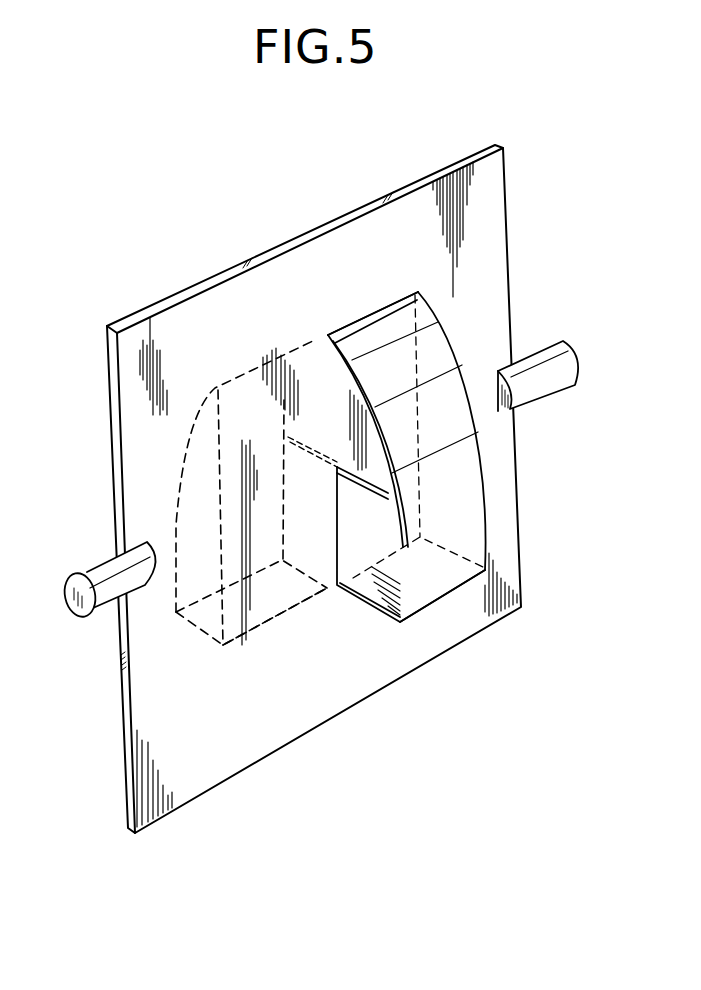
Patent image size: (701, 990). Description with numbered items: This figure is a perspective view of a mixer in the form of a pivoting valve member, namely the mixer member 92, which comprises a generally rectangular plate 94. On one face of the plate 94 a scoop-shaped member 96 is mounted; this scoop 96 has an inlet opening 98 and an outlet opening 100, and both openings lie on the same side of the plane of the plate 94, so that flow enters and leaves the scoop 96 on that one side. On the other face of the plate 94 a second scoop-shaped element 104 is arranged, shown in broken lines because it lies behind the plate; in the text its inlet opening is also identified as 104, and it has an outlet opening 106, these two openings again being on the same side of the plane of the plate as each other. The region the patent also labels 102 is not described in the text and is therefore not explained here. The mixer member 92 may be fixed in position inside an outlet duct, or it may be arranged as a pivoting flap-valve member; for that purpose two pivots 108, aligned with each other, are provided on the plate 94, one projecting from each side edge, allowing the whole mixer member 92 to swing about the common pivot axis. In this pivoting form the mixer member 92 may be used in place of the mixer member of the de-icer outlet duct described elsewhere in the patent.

The mixer member 92 is at (519, 572).
The rectangular plate 94 is at (478, 262).
The scoop-shaped member 96 is at (460, 507).
The inlet opening 98 is at (442, 598).
The outlet opening 100 is at (350, 377).
The arch-shaped recess 102 is at (219, 512).
The scoop-shaped element 104 is at (263, 622).
The outlet opening 106 is at (323, 408).
The pivots 108 is at (77, 619).